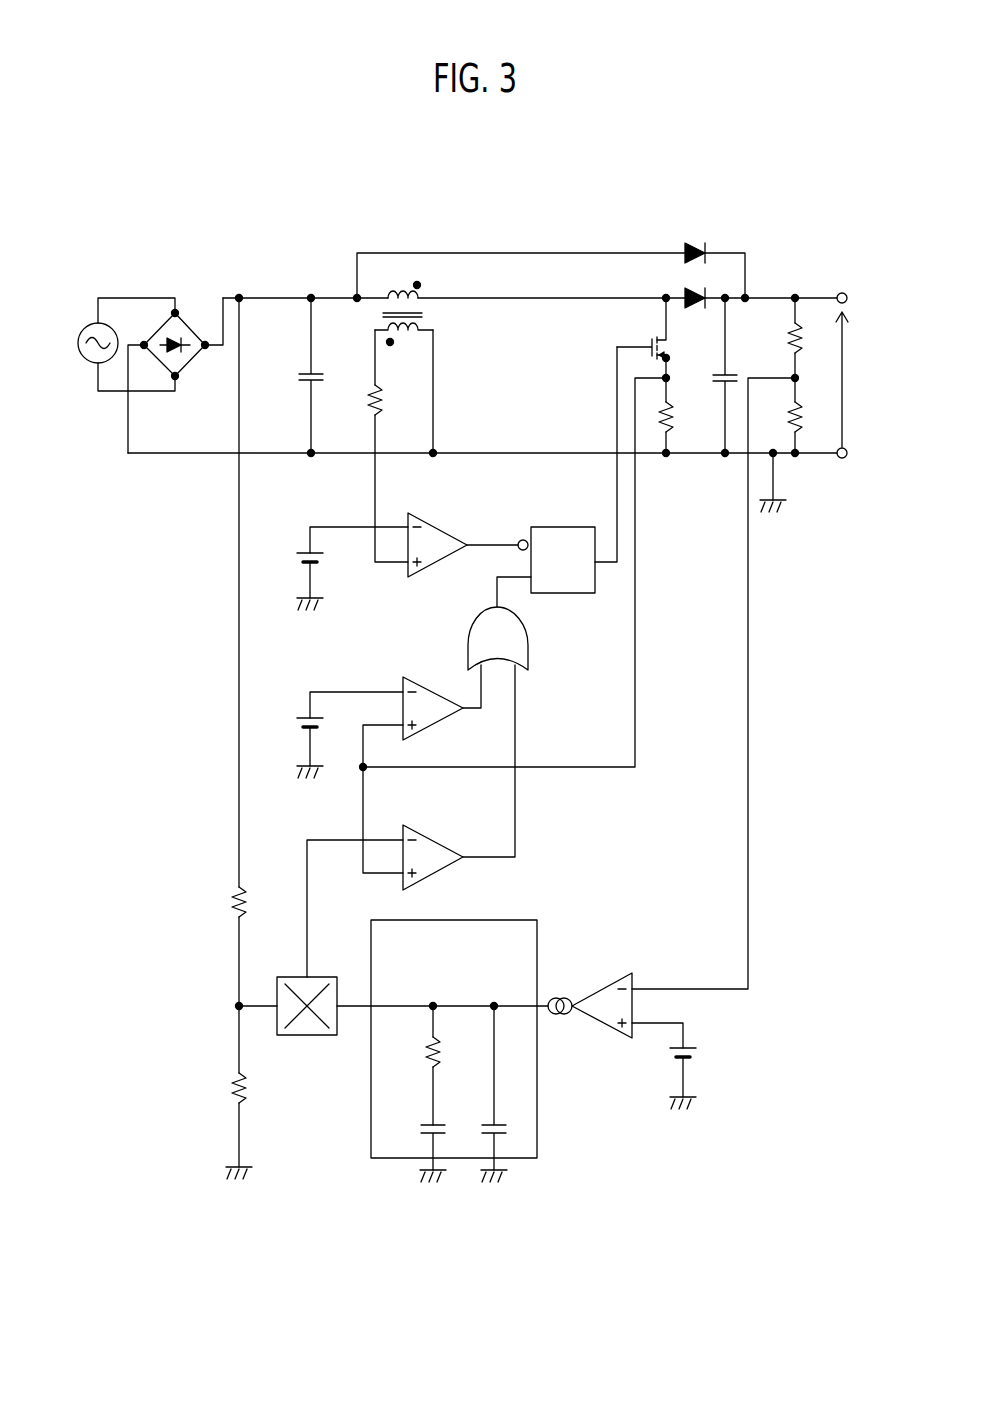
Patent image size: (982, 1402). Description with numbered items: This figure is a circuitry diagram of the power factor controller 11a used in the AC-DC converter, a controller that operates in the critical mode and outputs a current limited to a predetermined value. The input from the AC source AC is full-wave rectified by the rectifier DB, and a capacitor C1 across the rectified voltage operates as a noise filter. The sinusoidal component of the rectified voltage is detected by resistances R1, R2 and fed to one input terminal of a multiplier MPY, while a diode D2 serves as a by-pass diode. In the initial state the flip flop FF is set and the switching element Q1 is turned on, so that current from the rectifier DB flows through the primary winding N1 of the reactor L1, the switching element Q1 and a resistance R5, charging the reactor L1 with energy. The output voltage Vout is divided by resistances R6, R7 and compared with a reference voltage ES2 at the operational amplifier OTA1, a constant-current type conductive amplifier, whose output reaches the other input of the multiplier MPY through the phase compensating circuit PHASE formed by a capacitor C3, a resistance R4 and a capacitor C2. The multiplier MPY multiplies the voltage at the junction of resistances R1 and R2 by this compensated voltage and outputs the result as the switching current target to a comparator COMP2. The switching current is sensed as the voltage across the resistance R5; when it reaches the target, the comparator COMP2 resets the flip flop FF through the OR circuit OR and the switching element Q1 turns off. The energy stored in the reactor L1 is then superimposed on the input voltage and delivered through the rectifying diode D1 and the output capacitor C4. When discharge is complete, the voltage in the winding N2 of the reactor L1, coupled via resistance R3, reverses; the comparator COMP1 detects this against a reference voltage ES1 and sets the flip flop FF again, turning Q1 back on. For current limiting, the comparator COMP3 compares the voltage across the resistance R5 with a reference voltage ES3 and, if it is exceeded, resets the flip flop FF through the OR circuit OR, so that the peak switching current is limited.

The power factor controller 11a is at (588, 202).
The AC power source AC is at (118, 344).
The rectifier DB is at (198, 330).
The capacitor C1 is at (297, 375).
The reactor L1 is at (423, 356).
The primary winding N1 is at (404, 278).
The winding N2 is at (404, 388).
The resistance R3 is at (375, 473).
The rectifying diode D1 is at (697, 310).
The diode D2 is at (551, 259).
The switching element Q1 is at (643, 350).
The resistance R5 is at (682, 427).
The output capacitor C4 is at (713, 375).
The resistance R6 is at (811, 350).
The resistance R7 is at (811, 427).
The output voltage Vout is at (864, 379).
The reference voltage ES1 is at (340, 554).
The comparator COMP1 is at (456, 530).
The flip flop FF is at (546, 553).
The OR circuit OR is at (514, 732).
The reference voltage ES3 is at (337, 720).
The comparator COMP3 is at (413, 761).
The comparator COMP2 is at (385, 886).
The resistance R1 is at (225, 980).
The resistance R2 is at (228, 1126).
The multiplier MPY is at (393, 1008).
The phase compensating circuit PHASE is at (454, 1051).
The resistance R4 is at (417, 1065).
The capacitor C2 is at (419, 1149).
The capacitor C3 is at (481, 1094).
The operational amplifier OTA1 is at (590, 995).
The reference voltage ES2 is at (687, 1066).